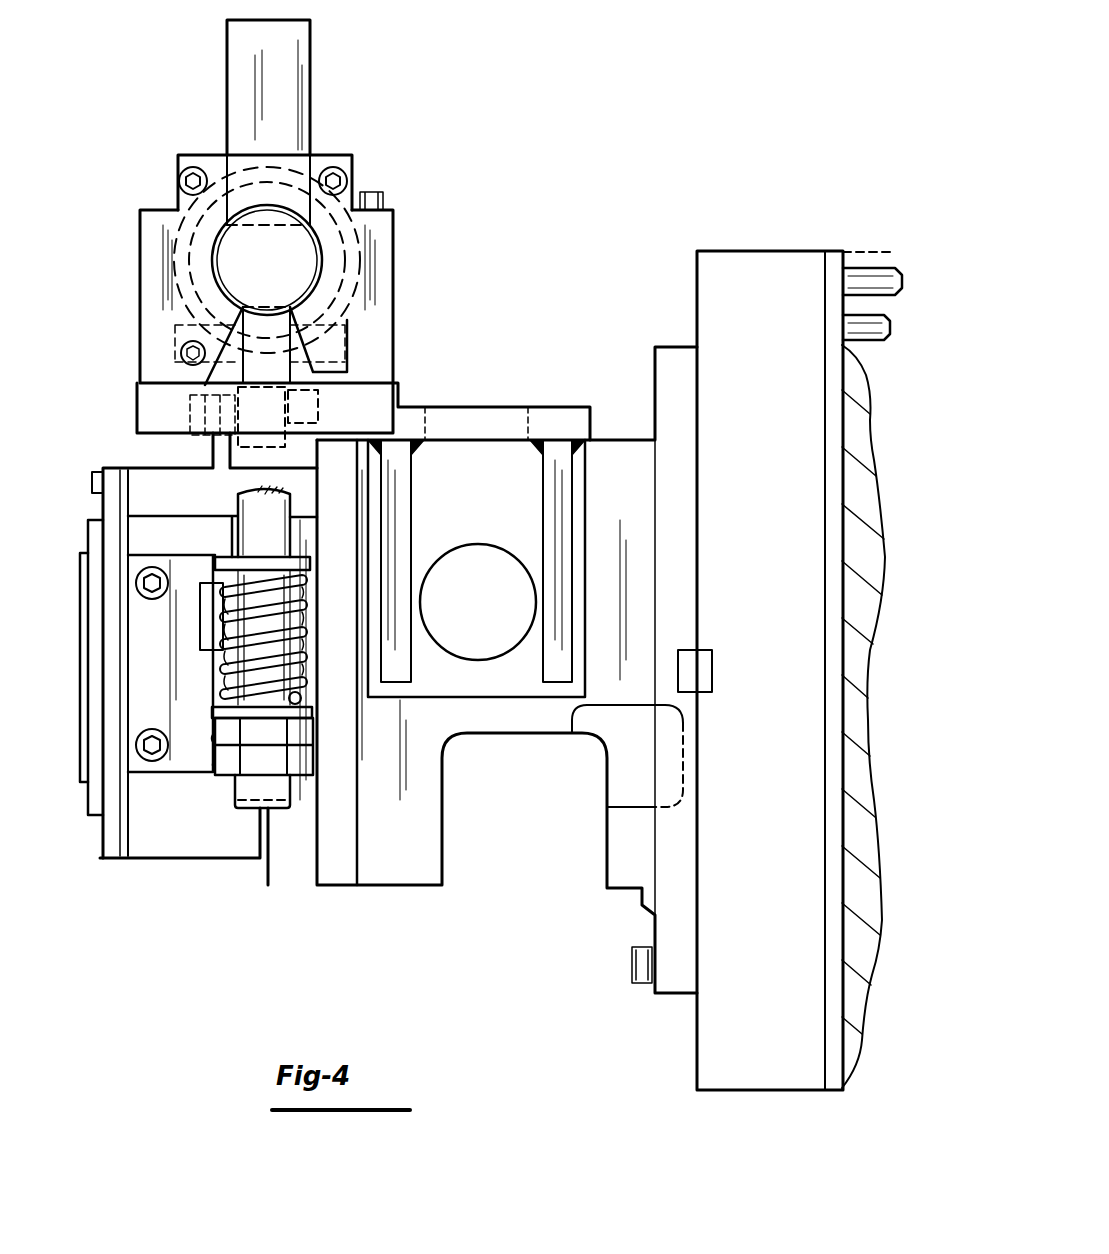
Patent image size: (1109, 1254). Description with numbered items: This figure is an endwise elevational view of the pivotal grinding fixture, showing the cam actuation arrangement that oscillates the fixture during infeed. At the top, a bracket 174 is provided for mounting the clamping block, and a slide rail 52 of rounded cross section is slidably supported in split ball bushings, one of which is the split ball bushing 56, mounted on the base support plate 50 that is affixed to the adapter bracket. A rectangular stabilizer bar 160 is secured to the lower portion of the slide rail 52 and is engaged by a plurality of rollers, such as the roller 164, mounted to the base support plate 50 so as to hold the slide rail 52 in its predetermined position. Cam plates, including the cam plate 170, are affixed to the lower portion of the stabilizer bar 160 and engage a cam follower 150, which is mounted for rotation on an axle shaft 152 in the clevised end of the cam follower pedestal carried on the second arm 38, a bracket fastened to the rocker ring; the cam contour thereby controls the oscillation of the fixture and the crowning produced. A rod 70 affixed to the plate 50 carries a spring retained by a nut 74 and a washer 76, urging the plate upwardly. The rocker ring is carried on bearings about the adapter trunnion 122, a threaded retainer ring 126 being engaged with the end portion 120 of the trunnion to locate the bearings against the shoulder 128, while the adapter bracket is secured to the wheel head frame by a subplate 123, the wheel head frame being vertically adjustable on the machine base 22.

The bracket 174 is at (228, 100).
The split ball bushing 56 is at (328, 158).
The slide rail 52 is at (232, 240).
The stabilizer bar 160 is at (243, 307).
The roller 164 is at (217, 352).
The cam plate 170 is at (287, 372).
The axle shaft 152 is at (283, 410).
The cam follower 150 is at (275, 445).
The base support plate 50 is at (137, 410).
The adapter trunnion 122 is at (107, 468).
The second arm 38 is at (138, 535).
The end portion 120 is at (88, 578).
The threaded retainer ring 126 is at (85, 790).
The rod 70 is at (230, 603).
The nut 74 is at (313, 775).
The washer 76 is at (235, 806).
The shoulder 128 is at (447, 872).
The subplate 123 is at (722, 248).
The machine base 22 is at (852, 250).